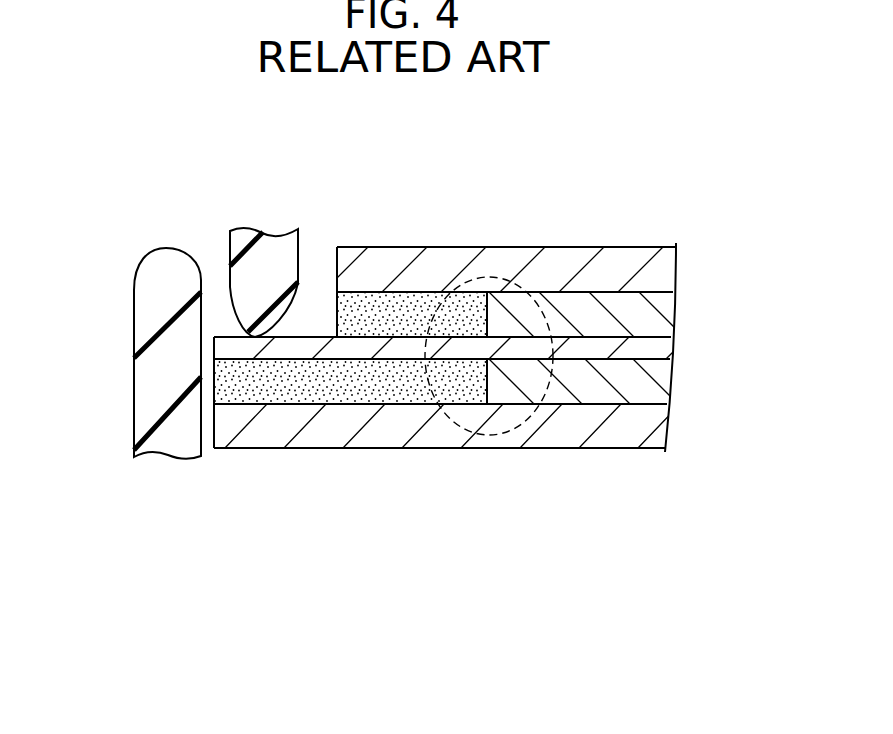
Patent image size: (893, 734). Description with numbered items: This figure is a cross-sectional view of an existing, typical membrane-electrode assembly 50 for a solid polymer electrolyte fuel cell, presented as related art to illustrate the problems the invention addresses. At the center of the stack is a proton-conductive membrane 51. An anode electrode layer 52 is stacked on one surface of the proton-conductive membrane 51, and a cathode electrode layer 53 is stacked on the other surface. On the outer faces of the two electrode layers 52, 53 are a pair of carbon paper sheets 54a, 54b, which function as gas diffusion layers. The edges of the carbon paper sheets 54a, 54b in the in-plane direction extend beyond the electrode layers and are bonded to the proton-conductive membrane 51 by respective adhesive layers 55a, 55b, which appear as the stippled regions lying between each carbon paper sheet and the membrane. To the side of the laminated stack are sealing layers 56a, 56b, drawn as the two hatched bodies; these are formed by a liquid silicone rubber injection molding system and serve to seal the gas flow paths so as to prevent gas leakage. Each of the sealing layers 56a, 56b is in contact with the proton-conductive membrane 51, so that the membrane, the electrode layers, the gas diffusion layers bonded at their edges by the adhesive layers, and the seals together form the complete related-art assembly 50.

The membrane-electrode assembly 50 is at (590, 200).
The proton-conductive membrane 51 is at (648, 350).
The anode electrode layer 52 is at (650, 317).
The cathode electrode layer 53 is at (648, 383).
The carbon paper sheet 54a is at (648, 270).
The carbon paper sheet 54b is at (648, 428).
The adhesive layer 55a is at (388, 308).
The adhesive layer 55b is at (370, 387).
The sealing layer 56a is at (262, 257).
The sealing layer 56b is at (147, 349).